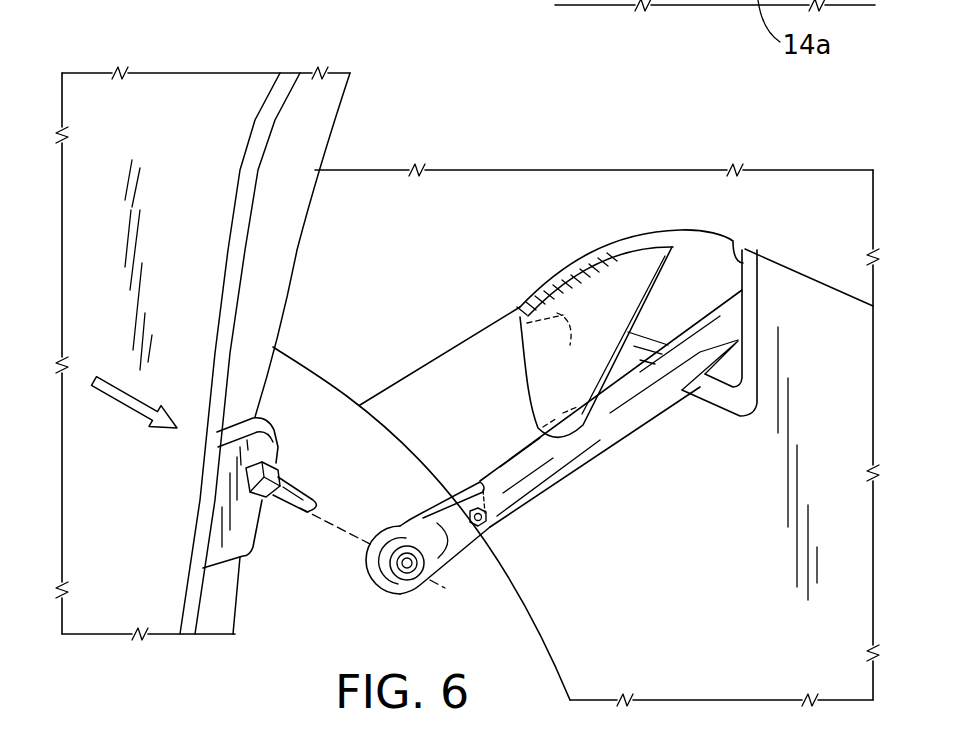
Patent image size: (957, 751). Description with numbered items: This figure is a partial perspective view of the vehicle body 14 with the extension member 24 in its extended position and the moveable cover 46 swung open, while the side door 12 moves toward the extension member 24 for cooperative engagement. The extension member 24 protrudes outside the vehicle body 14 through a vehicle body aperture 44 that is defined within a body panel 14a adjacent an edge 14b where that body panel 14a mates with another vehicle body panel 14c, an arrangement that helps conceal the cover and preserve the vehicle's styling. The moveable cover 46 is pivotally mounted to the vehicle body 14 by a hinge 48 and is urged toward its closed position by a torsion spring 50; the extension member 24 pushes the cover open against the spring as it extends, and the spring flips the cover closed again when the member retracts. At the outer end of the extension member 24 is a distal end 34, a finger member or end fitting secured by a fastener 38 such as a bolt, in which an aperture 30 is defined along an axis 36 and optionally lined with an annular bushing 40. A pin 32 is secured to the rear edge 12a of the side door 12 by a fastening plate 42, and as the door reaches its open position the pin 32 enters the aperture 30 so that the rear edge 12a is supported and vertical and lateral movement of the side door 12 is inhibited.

The side door 12 is at (175, 98).
The rear edge 12a is at (270, 290).
The vehicle body 14 is at (810, 160).
The body panel 14a is at (818, 310).
The edge 14b is at (437, 355).
The vehicle body panel 14c is at (485, 197).
The extension member 24 is at (618, 450).
The aperture 30 is at (406, 578).
The pin 32 is at (293, 490).
The distal end 34 is at (375, 578).
The axis 36 is at (453, 593).
The fastener 38 is at (488, 521).
The annular bushing 40 is at (408, 548).
The fastening plate 42 is at (277, 443).
The vehicle body aperture 44 is at (738, 245).
The moveable cover 46 is at (535, 392).
The hinge 48 is at (597, 247).
The torsion spring 50 is at (523, 333).